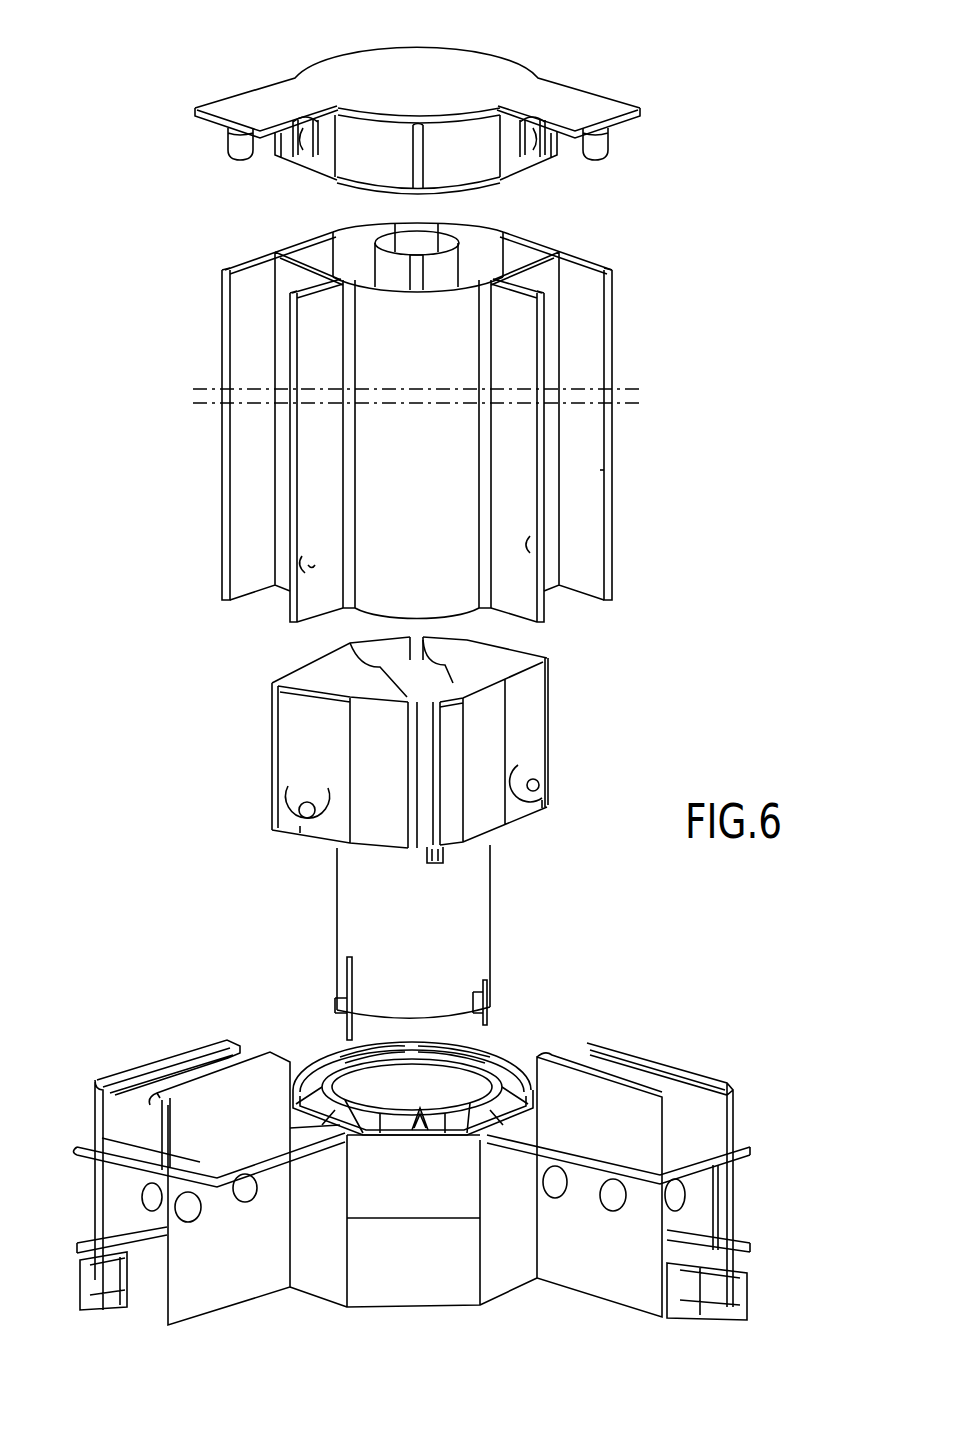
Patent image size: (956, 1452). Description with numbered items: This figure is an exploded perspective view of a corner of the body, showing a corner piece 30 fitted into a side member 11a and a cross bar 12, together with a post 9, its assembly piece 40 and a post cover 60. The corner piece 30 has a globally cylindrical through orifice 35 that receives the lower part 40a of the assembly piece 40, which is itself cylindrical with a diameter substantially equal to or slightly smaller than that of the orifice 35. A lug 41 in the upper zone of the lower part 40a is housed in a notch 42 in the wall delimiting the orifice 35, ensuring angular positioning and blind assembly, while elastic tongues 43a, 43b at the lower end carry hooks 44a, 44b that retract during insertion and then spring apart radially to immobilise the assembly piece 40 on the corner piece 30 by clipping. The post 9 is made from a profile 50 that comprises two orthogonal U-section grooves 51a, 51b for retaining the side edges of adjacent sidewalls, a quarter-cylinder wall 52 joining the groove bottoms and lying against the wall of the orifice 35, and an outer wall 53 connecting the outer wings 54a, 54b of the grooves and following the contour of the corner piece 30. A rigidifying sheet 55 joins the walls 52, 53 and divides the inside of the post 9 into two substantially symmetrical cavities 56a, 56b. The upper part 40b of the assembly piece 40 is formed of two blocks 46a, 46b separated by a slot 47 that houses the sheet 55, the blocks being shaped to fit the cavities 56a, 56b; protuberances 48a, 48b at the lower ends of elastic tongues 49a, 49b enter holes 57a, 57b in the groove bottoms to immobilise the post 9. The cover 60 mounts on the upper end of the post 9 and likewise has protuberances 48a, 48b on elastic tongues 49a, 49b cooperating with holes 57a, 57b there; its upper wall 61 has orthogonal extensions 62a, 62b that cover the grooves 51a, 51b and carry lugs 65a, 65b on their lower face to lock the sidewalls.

The post 9 is at (614, 472).
The left side profile 11a is at (230, 1268).
The right side profile 12 is at (583, 1260).
The corner piece 30 is at (412, 1173).
The through orifice 35 is at (460, 1090).
The assembly piece 40 is at (401, 838).
The lower part 40a is at (368, 902).
The upper part 40b is at (527, 688).
The lug 41 is at (453, 862).
The notch 42 is at (425, 1110).
The elastic tongue 43a is at (340, 1023).
The elastic tongue 43b is at (487, 1017).
The protuberance or hook 44a is at (335, 998).
The protuberance or hook 44b is at (490, 992).
The block 46a is at (298, 723).
The block 46b is at (525, 733).
The slot 47 is at (433, 773).
The protuberance 48a is at (302, 145).
The protuberance 48b is at (533, 147).
The elastic tongue 49a is at (300, 147).
The elastic tongue 49b is at (533, 147).
The profile 50 is at (425, 405).
The U-section groove 51a is at (259, 422).
The U-section groove 51b is at (568, 502).
The wall 52 is at (442, 418).
The wall 53 is at (508, 253).
The outer wing 54a is at (222, 540).
The outer wing 54b is at (612, 435).
The rigidifying sheet 55 is at (437, 293).
The cavity 56a is at (355, 265).
The cavity 56b is at (520, 258).
The hole 57a is at (303, 287).
The hole 57b is at (530, 285).
The cover 60 is at (423, 97).
The upper wall 61 is at (442, 62).
The orthogonal extension 62a is at (233, 110).
The orthogonal extension 62b is at (607, 107).
The lug 65a is at (237, 143).
The lug 65b is at (603, 142).